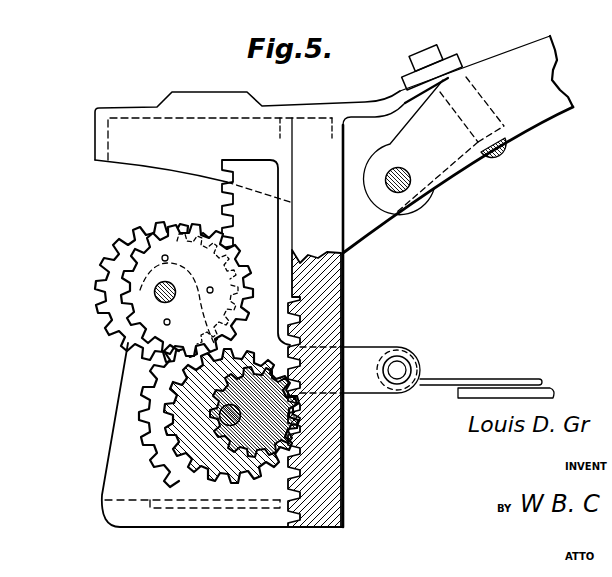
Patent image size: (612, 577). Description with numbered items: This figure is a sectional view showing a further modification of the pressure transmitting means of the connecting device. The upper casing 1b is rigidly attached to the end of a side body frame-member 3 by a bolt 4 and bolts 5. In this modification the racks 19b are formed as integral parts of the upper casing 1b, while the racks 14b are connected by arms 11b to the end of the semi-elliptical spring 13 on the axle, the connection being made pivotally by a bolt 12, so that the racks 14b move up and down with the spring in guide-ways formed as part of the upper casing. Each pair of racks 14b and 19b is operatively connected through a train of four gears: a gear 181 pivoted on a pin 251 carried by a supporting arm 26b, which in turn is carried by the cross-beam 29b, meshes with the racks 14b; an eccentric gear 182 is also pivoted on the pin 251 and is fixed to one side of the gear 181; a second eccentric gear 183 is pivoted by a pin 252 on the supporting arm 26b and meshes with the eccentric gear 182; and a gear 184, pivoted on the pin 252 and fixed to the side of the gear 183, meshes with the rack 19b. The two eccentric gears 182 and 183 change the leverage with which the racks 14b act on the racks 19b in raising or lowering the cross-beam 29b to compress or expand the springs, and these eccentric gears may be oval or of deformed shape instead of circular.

The upper casing 1b is at (147, 107).
The side body frame-member 3 is at (540, 67).
The bolt 4 is at (401, 172).
The bolts 5 is at (427, 48).
The racks 14b is at (247, 207).
The gear 181 is at (123, 242).
The eccentric gear 182 is at (160, 248).
The second eccentric gear 183 is at (180, 438).
The gear 184 is at (183, 462).
The pin 251 is at (153, 291).
The pin 252 is at (220, 418).
The supporting arm 26b is at (122, 397).
The cross-beam 29b is at (190, 512).
The racks 19b is at (318, 308).
The arms 11b is at (358, 382).
The bolt 12 is at (402, 368).
The semi-elliptical spring 13 is at (525, 378).